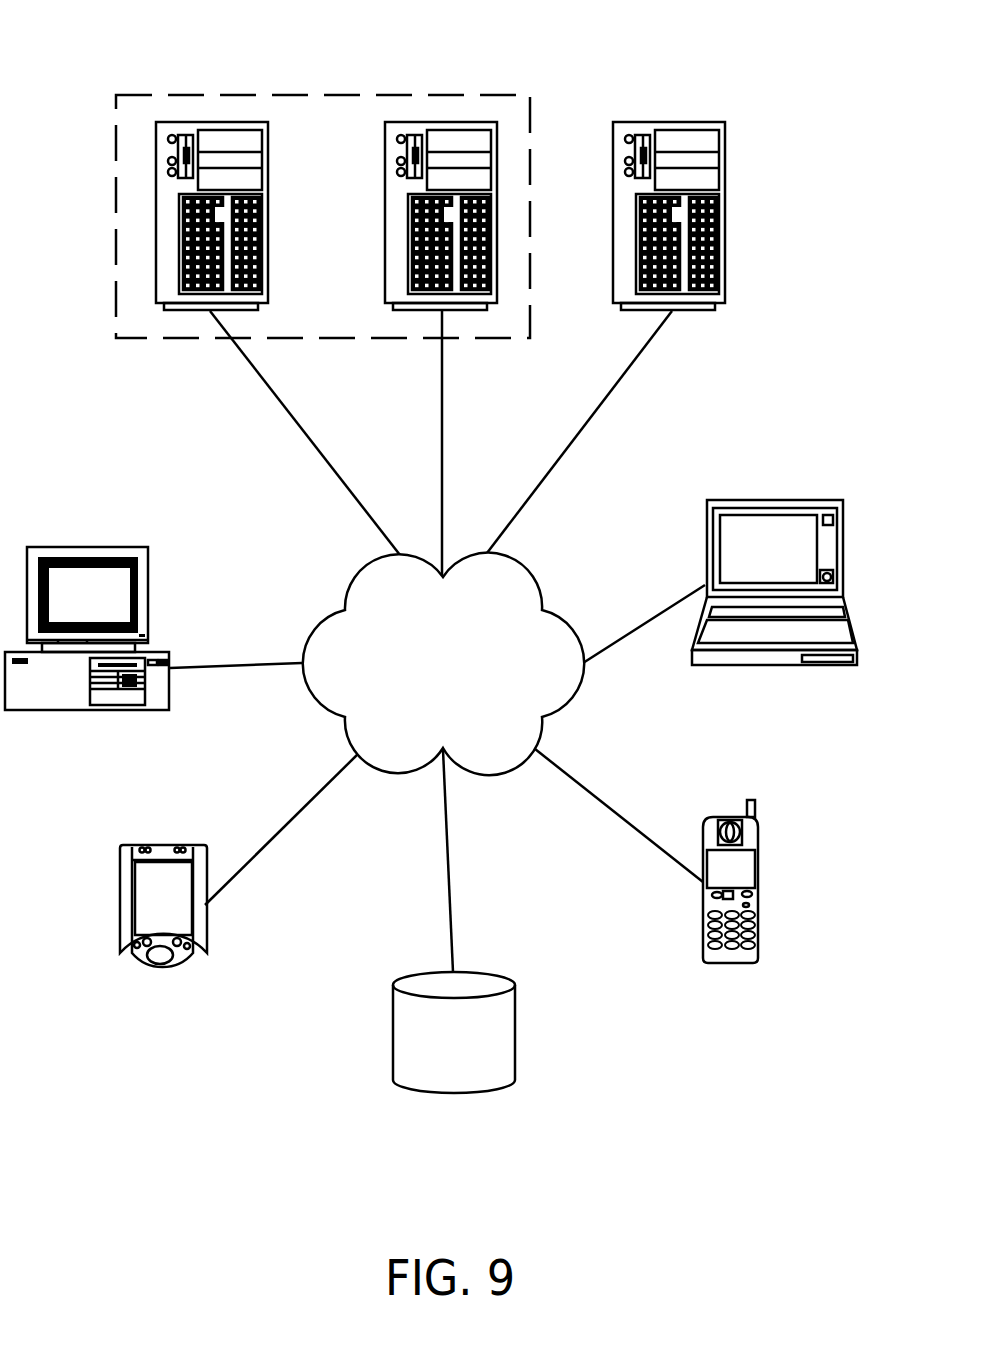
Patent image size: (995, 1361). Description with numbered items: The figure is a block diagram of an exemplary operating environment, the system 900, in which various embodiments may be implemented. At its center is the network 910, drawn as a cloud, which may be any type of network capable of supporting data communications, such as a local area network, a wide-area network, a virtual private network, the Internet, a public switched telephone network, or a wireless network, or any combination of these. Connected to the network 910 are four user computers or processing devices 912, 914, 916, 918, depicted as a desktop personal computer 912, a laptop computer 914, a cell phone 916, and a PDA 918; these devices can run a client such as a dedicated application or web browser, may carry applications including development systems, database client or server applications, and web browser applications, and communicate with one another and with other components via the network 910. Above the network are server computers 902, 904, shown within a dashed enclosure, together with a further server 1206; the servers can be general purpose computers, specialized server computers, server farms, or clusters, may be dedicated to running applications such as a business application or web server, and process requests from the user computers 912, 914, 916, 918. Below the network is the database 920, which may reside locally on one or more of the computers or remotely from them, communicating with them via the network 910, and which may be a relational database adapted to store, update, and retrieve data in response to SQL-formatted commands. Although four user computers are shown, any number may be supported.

The system 900 is at (825, 124).
The server computer 902 is at (192, 122).
The server computer 904 is at (437, 122).
The server 1206 is at (727, 213).
The network 910 is at (460, 713).
The user computer 912 is at (85, 547).
The user computer 914 is at (772, 500).
The user computer 916 is at (727, 965).
The user computer 918 is at (162, 972).
The database 920 is at (475, 1082).